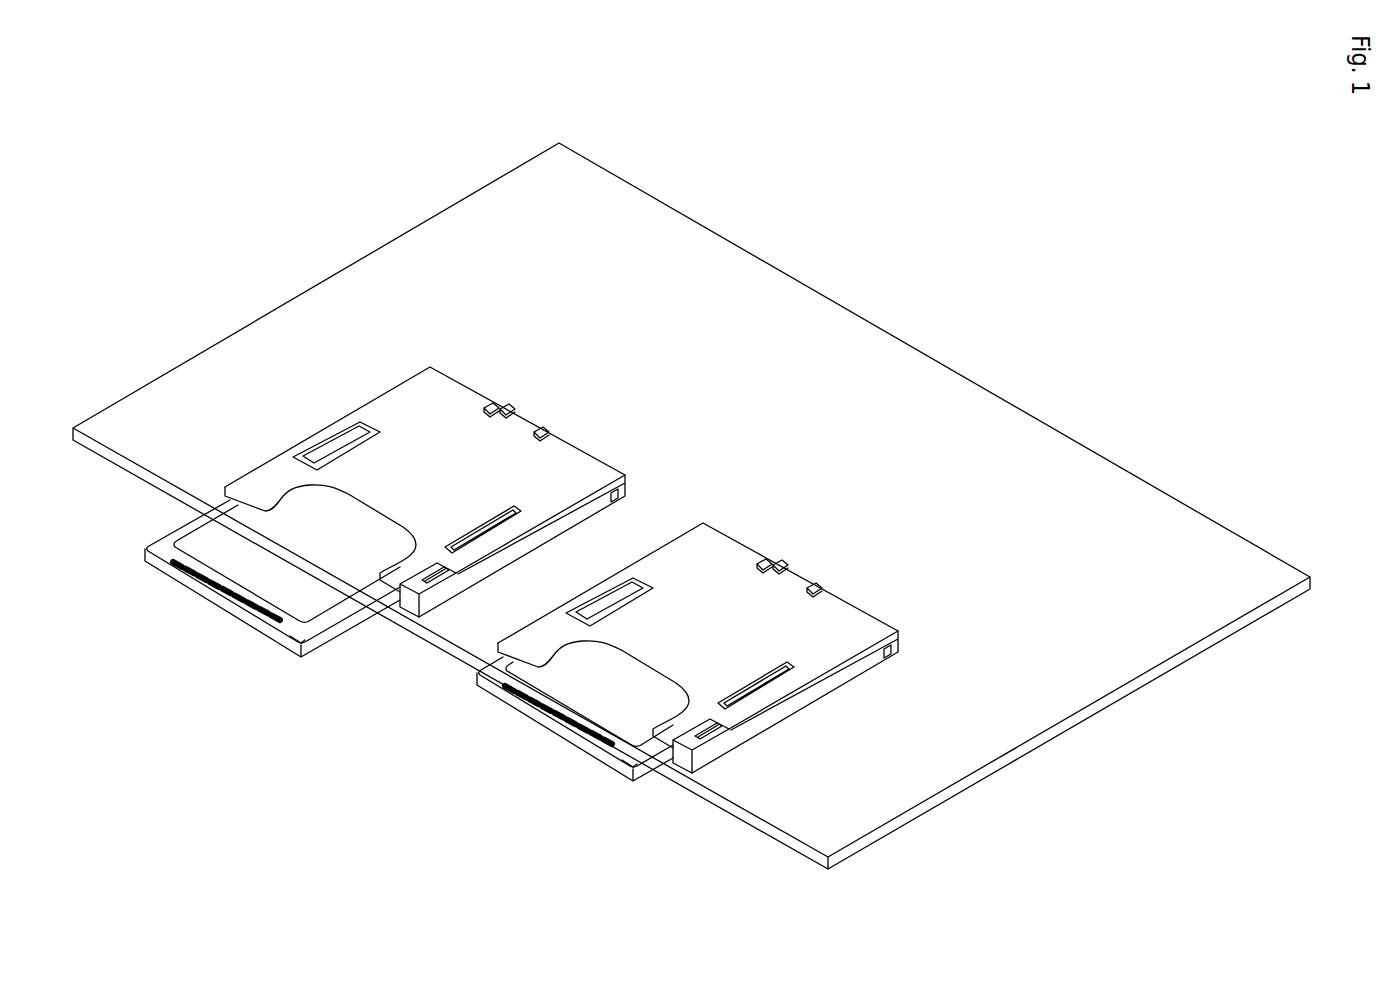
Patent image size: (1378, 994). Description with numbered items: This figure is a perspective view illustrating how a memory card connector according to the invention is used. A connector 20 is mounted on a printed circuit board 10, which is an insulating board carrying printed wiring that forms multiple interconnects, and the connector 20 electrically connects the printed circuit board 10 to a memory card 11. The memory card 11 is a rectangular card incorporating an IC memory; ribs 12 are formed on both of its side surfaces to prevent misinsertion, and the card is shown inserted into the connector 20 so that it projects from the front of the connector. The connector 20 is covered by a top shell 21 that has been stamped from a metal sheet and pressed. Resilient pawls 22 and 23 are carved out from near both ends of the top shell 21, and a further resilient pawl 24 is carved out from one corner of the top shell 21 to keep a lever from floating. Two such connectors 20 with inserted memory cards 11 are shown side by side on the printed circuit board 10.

The printed circuit board 10 is at (835, 333).
The memory card 11 is at (192, 540).
The ribs 12 is at (346, 630).
The connector 20 is at (562, 558).
The top shell 21 is at (444, 417).
The resilient pawl 22 is at (328, 456).
The resilient pawl 23 is at (482, 518).
The resilient pawl 24 is at (448, 586).